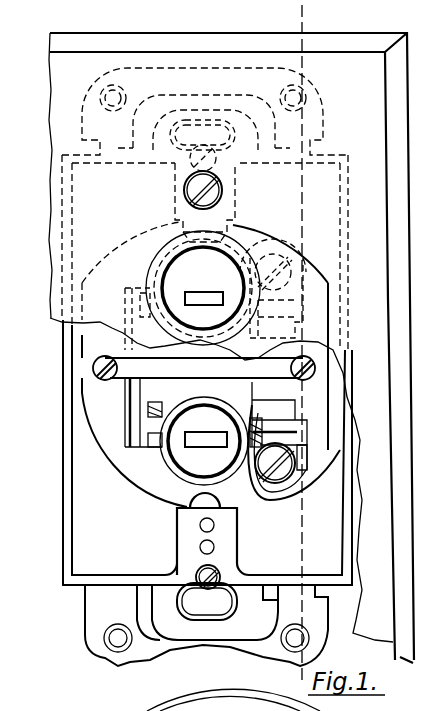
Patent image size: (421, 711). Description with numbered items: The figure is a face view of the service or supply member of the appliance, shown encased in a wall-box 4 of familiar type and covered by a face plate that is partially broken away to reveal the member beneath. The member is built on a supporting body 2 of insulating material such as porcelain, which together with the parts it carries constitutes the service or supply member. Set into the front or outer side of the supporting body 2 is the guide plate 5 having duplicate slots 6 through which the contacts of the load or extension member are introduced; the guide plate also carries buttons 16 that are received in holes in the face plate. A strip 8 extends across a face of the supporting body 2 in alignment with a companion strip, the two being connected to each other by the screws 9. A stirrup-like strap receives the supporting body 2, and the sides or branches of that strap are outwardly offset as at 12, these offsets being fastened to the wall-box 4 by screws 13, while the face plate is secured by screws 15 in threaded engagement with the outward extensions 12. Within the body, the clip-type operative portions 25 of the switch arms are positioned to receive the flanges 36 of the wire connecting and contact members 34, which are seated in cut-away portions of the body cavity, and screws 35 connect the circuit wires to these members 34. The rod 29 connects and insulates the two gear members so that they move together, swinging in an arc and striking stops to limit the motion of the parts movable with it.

The supporting body 2 is at (150, 540).
The wall-box 4 is at (62, 522).
The guide plate 5 is at (175, 413).
The slots 6 is at (181, 292).
The strip 8 is at (135, 375).
The screws 9 is at (95, 370).
The outward offsets 12 is at (240, 192).
The screws 13 is at (200, 150).
The screws 15 is at (185, 183).
The buttons 16 is at (208, 273).
The operative portions 25 is at (262, 413).
The rod 29 is at (165, 398).
The wire connecting and contact members 34 is at (308, 473).
The screws 35 is at (290, 275).
The flanges 36 is at (282, 422).